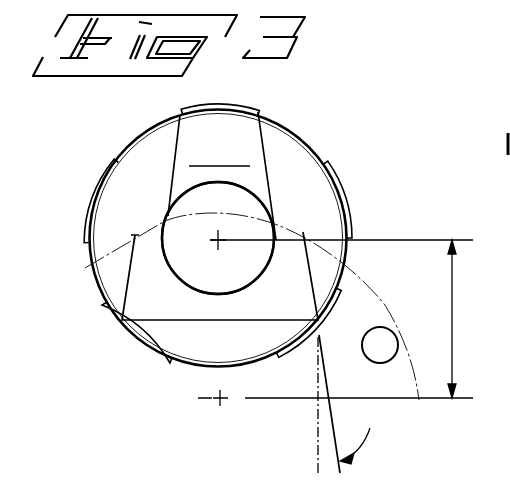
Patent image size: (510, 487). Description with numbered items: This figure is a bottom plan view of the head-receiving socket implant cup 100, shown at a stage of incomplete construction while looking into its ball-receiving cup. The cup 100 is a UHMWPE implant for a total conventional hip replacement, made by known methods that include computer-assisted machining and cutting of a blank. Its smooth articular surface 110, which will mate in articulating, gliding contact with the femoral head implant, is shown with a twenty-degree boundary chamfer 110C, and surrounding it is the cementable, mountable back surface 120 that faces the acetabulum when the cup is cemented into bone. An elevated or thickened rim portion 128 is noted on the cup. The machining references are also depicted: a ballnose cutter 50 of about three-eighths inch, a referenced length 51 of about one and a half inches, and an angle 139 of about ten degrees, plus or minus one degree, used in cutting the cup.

The socket implant cup 100 is at (300, 108).
The articular surface 110 is at (210, 265).
The boundary chamfer 110C is at (275, 240).
The back surface 120 is at (347, 187).
The elevated or thickened rim portion 128 is at (231, 292).
The angle 139 is at (316, 461).
The ballnose cutter 50 is at (380, 363).
The length 51 is at (451, 294).